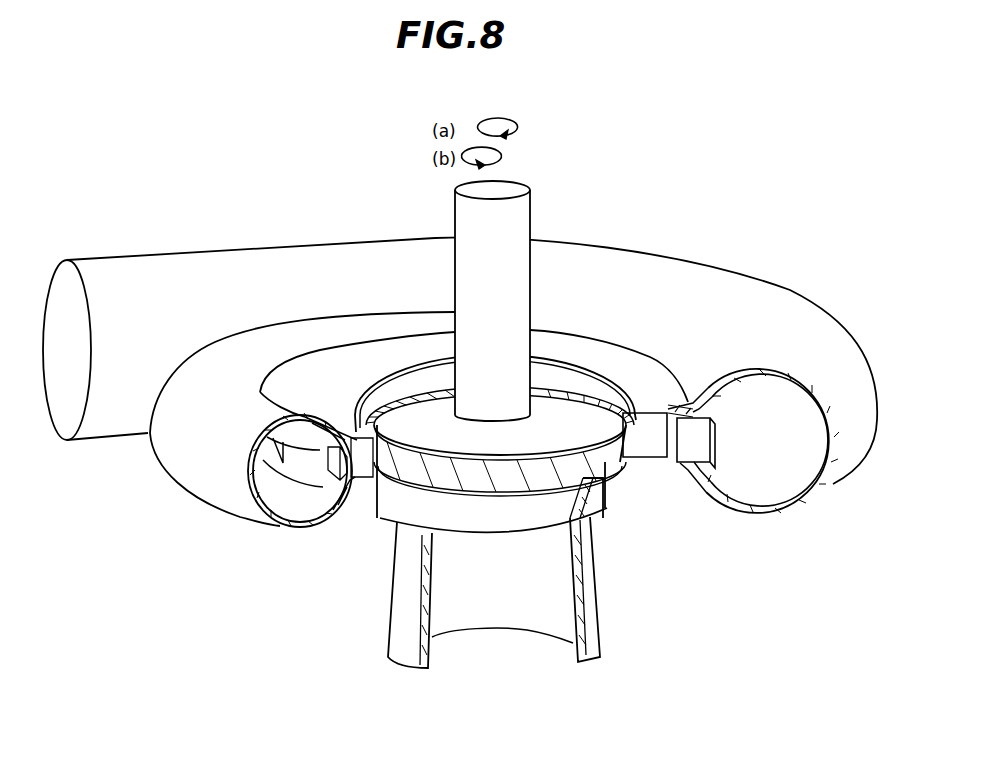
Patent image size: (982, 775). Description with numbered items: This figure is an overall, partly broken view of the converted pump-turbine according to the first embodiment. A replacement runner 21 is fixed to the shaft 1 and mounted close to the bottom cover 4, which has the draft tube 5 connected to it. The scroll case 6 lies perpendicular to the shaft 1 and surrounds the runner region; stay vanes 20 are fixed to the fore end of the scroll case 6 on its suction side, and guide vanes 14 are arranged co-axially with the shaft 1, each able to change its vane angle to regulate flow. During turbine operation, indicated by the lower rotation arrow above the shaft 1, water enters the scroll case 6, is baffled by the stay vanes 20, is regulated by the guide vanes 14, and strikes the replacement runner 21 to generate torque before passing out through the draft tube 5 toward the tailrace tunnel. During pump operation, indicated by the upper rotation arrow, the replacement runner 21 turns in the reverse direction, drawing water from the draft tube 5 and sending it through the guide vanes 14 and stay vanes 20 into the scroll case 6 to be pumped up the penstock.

The shaft 1 is at (523, 226).
The bottom cover 4 is at (647, 410).
The draft tube 5 is at (478, 618).
The scroll case 6 is at (797, 506).
The guide vanes 14 is at (633, 457).
The stay vanes 20 is at (693, 458).
The replacement runner 21 is at (516, 518).